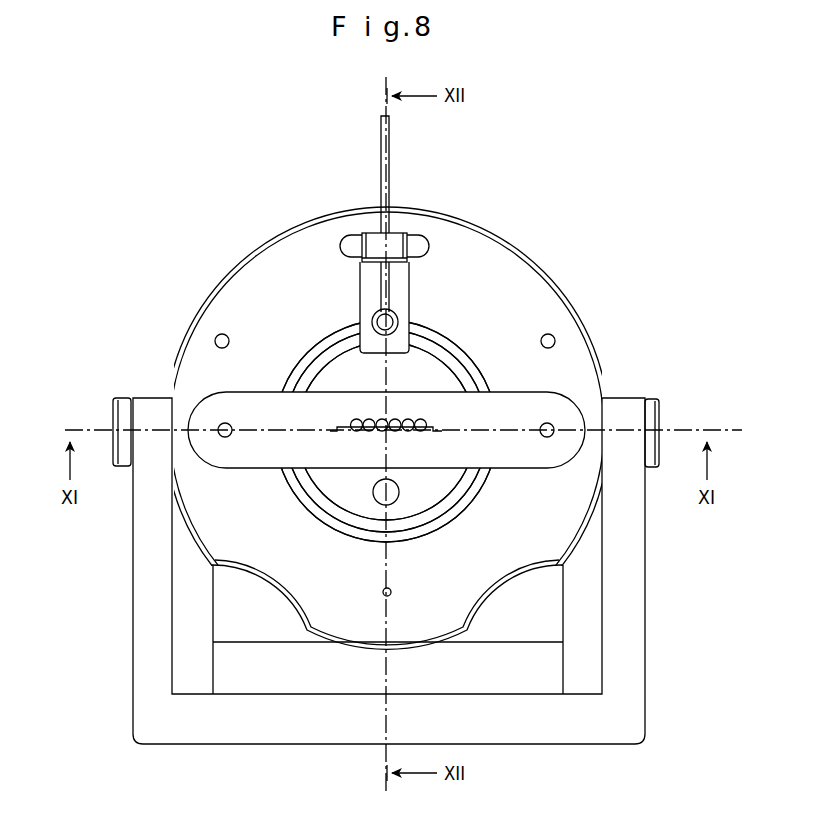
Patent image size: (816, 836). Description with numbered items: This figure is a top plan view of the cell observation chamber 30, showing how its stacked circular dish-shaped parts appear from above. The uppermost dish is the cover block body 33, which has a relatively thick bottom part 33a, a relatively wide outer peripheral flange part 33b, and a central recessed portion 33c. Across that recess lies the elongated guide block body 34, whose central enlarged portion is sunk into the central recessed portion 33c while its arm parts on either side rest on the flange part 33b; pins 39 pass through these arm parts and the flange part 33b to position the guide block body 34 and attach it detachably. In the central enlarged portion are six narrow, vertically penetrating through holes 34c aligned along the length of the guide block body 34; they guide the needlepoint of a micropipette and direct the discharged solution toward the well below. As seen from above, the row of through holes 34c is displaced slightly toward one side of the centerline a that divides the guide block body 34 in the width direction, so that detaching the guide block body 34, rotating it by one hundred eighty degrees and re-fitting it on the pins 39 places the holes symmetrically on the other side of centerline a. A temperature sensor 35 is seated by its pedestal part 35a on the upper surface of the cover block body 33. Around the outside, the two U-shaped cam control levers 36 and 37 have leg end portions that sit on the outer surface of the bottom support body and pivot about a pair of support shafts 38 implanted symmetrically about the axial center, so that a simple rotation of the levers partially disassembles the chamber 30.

The cell observation chamber 30 is at (584, 166).
The cover block body 33 is at (288, 222).
The bottom part 33a is at (343, 494).
The outer peripheral flange part 33b is at (245, 281).
The central recessed portion 33c is at (376, 444).
The guide block body 34 is at (546, 390).
The through holes 34c is at (404, 424).
The temperature sensor 35 is at (413, 222).
The pedestal part 35a is at (409, 292).
The cam control lever 36 is at (312, 745).
The cam control lever 37 is at (521, 682).
The support shafts 38 is at (113, 410).
The pins 39 is at (226, 440).
The centerline a is at (488, 440).